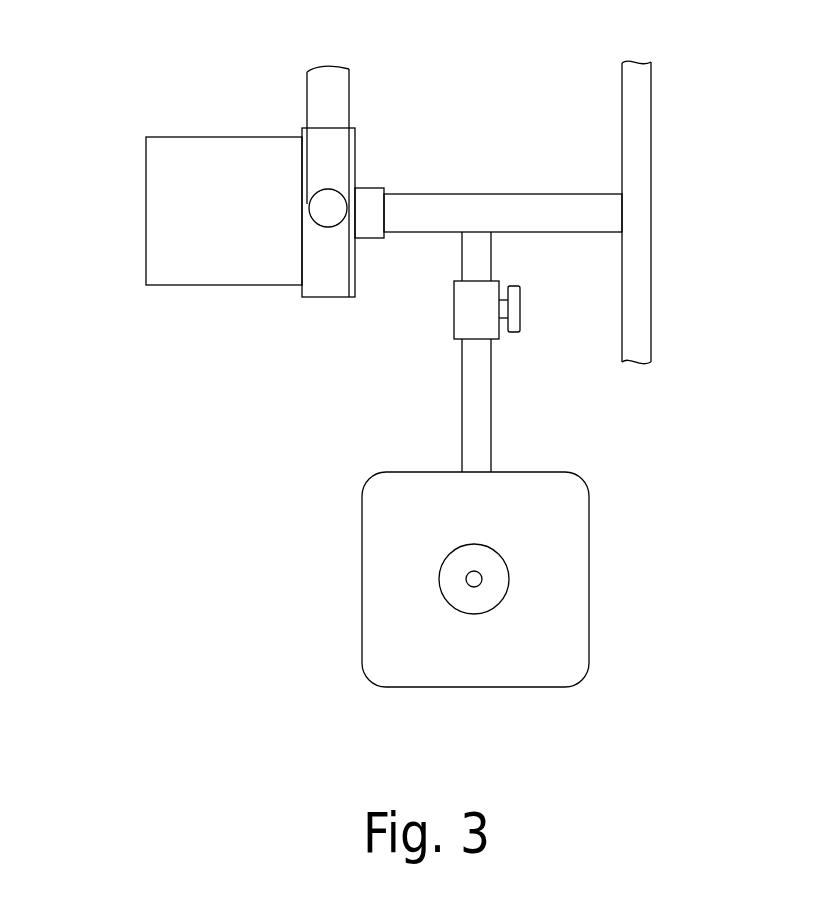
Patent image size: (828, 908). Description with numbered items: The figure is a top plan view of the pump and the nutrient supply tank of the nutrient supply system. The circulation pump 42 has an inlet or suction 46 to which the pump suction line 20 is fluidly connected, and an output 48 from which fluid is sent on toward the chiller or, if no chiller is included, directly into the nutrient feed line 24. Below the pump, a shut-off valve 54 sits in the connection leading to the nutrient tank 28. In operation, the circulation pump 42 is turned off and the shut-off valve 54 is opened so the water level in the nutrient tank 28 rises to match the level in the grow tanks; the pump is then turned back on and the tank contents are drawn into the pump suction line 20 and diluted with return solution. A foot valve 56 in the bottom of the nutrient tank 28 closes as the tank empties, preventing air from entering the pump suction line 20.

The pump suction line 20 is at (497, 203).
The nutrient feed line 24 is at (337, 82).
The nutrient tank 28 is at (563, 580).
The circulation pump 42 is at (203, 212).
The inlet or suction 46 is at (372, 193).
The output 48 is at (328, 207).
The shut-off valve 54 is at (461, 312).
The foot valve 56 is at (474, 557).